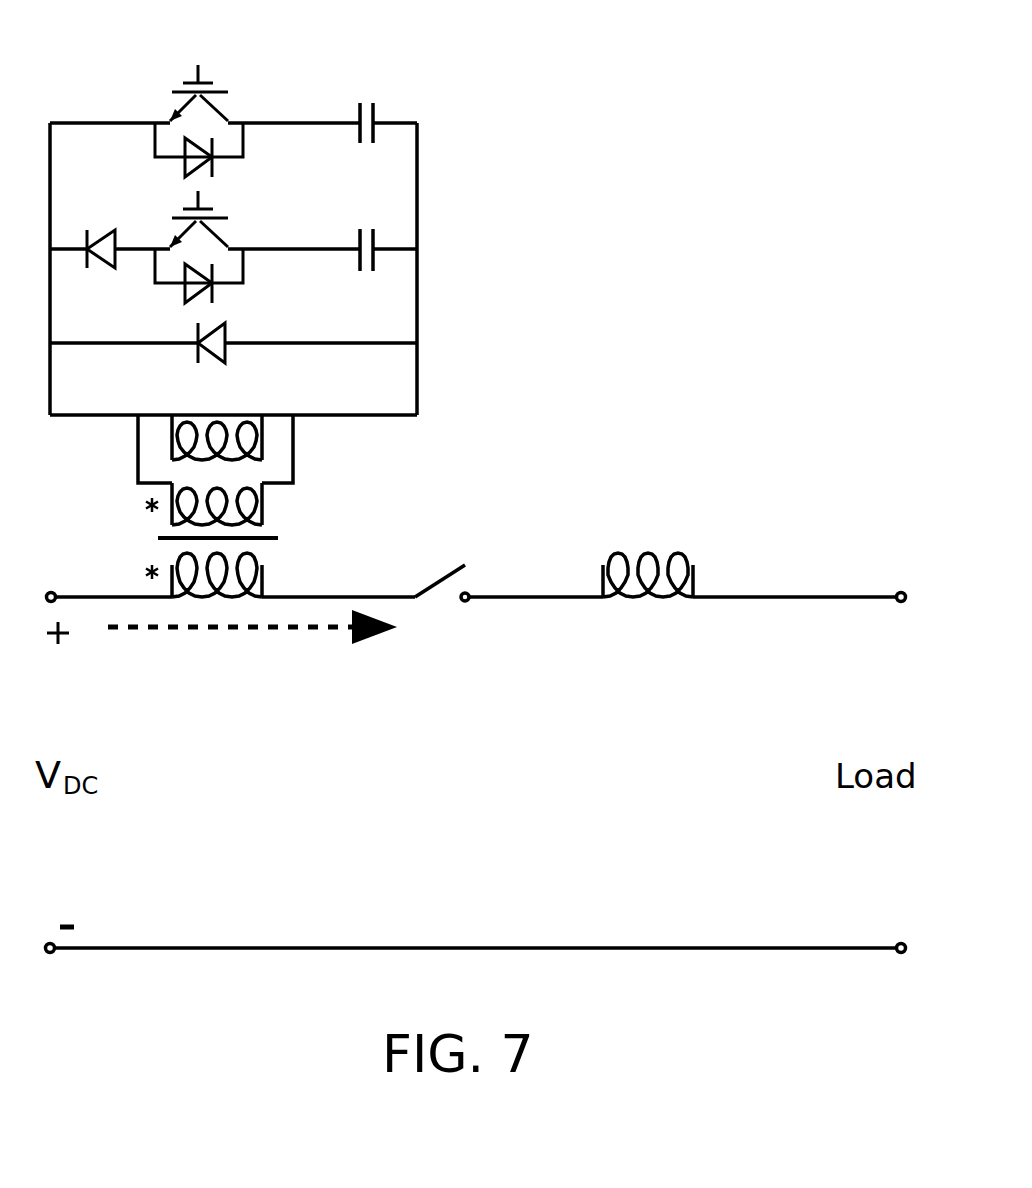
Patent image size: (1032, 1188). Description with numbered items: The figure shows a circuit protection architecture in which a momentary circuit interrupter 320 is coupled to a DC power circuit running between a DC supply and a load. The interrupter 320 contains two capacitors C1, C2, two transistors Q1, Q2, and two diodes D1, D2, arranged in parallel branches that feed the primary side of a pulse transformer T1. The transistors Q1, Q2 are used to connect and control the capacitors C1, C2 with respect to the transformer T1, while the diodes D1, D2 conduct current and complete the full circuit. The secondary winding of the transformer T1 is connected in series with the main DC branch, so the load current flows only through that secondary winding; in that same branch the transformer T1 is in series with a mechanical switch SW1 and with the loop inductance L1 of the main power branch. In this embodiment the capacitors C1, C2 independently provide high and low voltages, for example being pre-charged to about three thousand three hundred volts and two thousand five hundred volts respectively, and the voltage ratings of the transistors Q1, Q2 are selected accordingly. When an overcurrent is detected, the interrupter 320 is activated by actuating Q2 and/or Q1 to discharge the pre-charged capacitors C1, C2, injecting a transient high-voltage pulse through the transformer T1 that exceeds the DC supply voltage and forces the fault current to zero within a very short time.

The momentary circuit interrupter 320 is at (337, 240).
The transistor Q1 is at (225, 126).
The transistor Q2 is at (225, 250).
The capacitor C1 is at (351, 145).
The capacitor C2 is at (348, 269).
The diode D1 is at (237, 357).
The diode D2 is at (110, 270).
The pulse transformer T1 is at (233, 506).
The mechanical switch SW1 is at (509, 565).
The loop inductance L1 is at (749, 556).